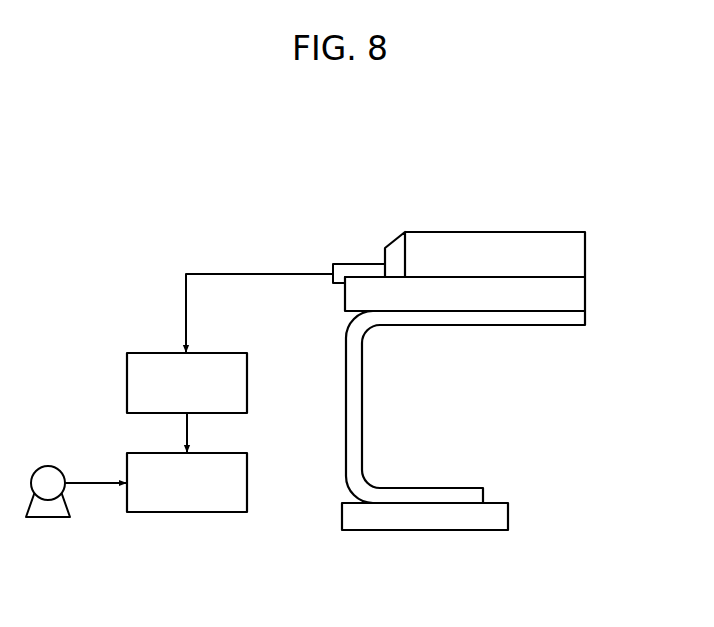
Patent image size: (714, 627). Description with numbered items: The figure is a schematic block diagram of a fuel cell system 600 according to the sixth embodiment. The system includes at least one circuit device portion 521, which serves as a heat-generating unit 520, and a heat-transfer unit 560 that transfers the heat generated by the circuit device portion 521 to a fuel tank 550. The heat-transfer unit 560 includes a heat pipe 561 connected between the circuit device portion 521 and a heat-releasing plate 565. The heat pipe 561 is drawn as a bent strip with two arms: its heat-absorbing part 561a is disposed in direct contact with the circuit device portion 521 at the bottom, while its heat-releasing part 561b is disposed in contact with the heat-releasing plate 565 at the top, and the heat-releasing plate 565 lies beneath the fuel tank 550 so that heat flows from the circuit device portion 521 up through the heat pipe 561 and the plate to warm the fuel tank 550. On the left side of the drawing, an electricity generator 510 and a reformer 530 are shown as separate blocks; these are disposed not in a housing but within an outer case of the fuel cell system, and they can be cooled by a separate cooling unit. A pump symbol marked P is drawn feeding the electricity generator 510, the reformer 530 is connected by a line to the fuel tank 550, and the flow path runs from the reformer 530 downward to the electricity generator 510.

The fuel cell system 600 is at (478, 146).
The fuel tank 550 is at (520, 232).
The heat-releasing plate 565 is at (587, 290).
The heat-transfer unit 560 is at (473, 380).
The heat pipe 561 is at (427, 407).
The heat-absorbing part 561a is at (435, 487).
The heat-releasing part 561b is at (512, 327).
The heat-generating unit 520 is at (465, 545).
The circuit device portion 521 is at (480, 532).
The reformer 530 is at (127, 378).
The electricity generator 510 is at (208, 513).
The pump P is at (48, 491).